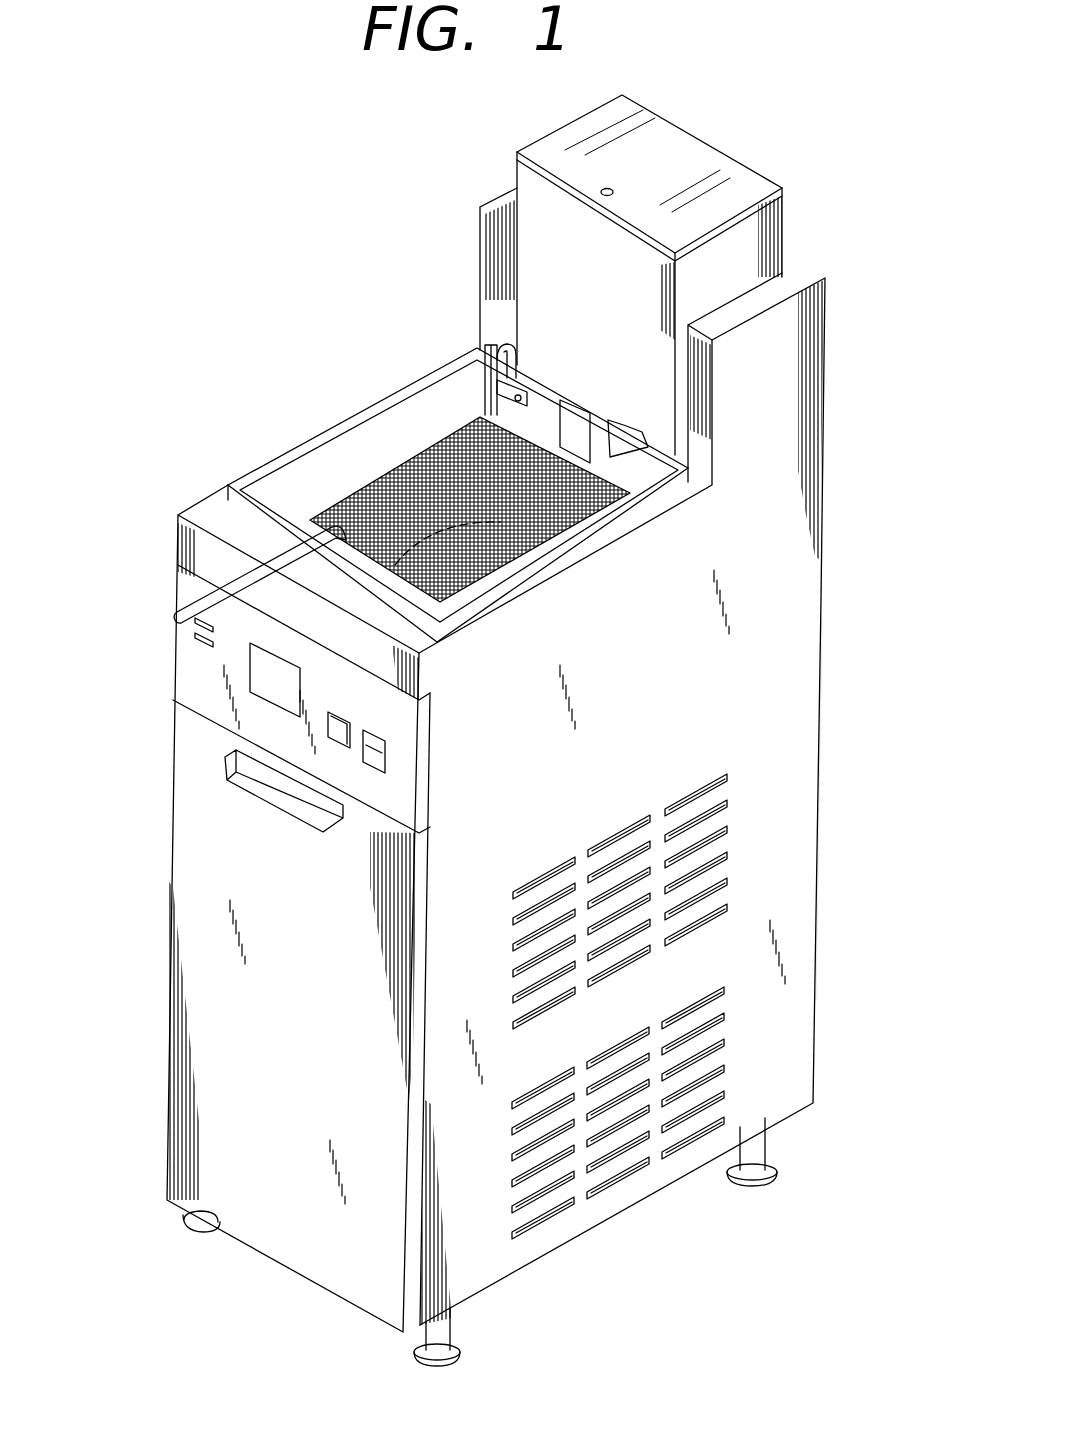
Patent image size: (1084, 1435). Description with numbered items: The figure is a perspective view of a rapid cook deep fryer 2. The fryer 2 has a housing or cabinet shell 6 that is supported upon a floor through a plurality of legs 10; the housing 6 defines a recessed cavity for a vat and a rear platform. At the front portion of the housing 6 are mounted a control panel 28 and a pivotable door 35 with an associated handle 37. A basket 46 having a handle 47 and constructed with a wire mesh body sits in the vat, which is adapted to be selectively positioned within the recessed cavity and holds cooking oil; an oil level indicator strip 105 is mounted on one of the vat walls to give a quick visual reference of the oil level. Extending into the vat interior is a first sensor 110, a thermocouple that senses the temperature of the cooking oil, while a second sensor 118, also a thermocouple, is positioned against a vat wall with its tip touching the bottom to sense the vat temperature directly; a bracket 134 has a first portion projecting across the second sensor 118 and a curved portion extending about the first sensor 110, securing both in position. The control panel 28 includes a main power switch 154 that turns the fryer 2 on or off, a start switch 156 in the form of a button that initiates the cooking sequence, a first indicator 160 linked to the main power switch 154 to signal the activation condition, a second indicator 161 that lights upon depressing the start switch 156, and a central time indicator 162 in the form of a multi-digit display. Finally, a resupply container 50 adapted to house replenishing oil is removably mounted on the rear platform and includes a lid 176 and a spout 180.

The fryer 2 is at (758, 98).
The housing 6 is at (800, 568).
The legs 10 is at (766, 1150).
The control panel 28 is at (186, 678).
The door 35 is at (185, 858).
The handle 37 is at (230, 776).
The basket 46 is at (360, 472).
The handle 47 is at (215, 592).
The container 50 is at (762, 228).
The oil level indicator strip 105 is at (572, 425).
The first sensor 110 is at (485, 341).
The second sensor 118 is at (512, 346).
The bracket 134 is at (483, 395).
The main power switch 154 is at (385, 765).
The start switch 156 is at (352, 722).
The first indicator 160 is at (194, 627).
The second indicator 161 is at (193, 642).
The time indicator 162 is at (250, 688).
The lid 176 is at (735, 185).
The spout 180 is at (690, 497).